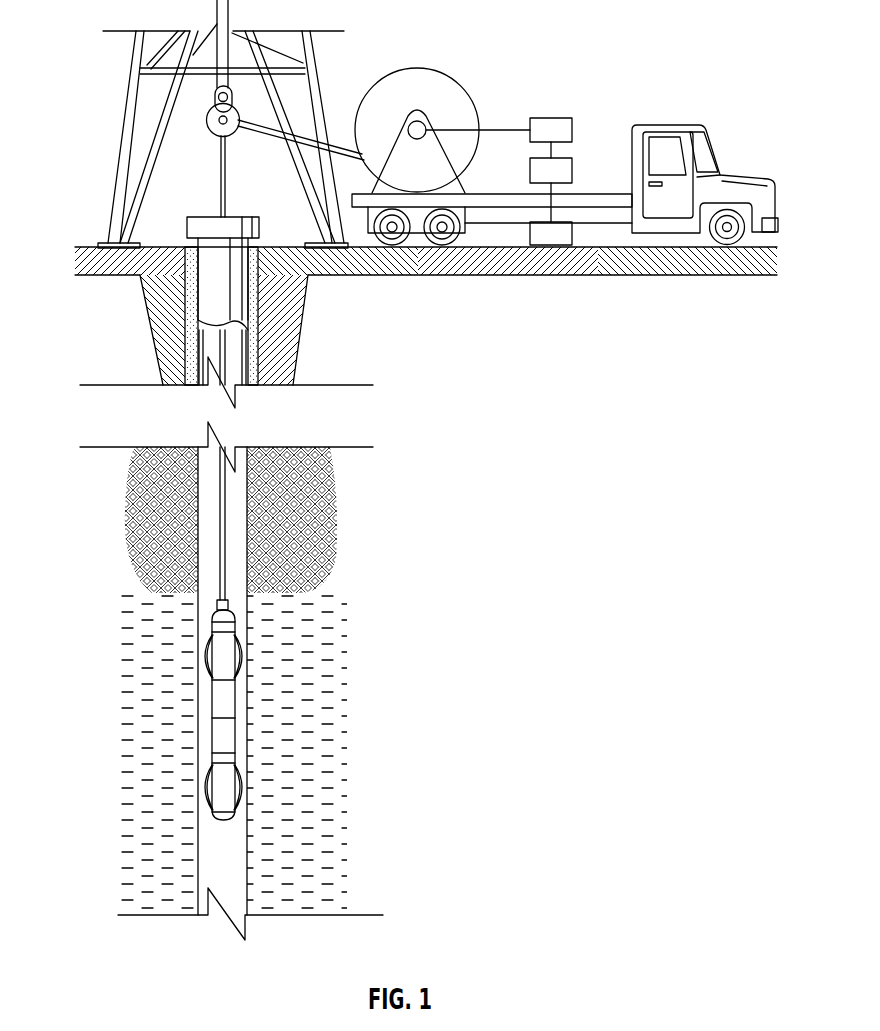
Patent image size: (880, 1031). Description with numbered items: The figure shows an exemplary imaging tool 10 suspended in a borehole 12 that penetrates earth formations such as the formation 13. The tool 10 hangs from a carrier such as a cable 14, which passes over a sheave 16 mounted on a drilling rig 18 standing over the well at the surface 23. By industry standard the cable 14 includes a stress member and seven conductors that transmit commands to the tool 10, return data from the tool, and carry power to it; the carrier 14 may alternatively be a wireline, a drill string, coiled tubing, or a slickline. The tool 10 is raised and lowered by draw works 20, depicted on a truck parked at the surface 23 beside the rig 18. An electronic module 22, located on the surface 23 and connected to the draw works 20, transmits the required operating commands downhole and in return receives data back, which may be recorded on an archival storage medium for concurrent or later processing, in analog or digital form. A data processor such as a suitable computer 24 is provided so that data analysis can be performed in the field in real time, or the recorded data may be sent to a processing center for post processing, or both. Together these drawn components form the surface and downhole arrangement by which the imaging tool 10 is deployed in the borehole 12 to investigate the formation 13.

The imaging tool 10 is at (238, 700).
The borehole 12 is at (248, 520).
The earth formation 13 is at (398, 497).
The cable 14 is at (226, 200).
The sheave 16 is at (215, 138).
The drilling rig 18 is at (127, 80).
The draw works 20 is at (418, 68).
The electronic module 22 is at (557, 118).
The surface 23 is at (88, 246).
The computer 24 is at (573, 168).